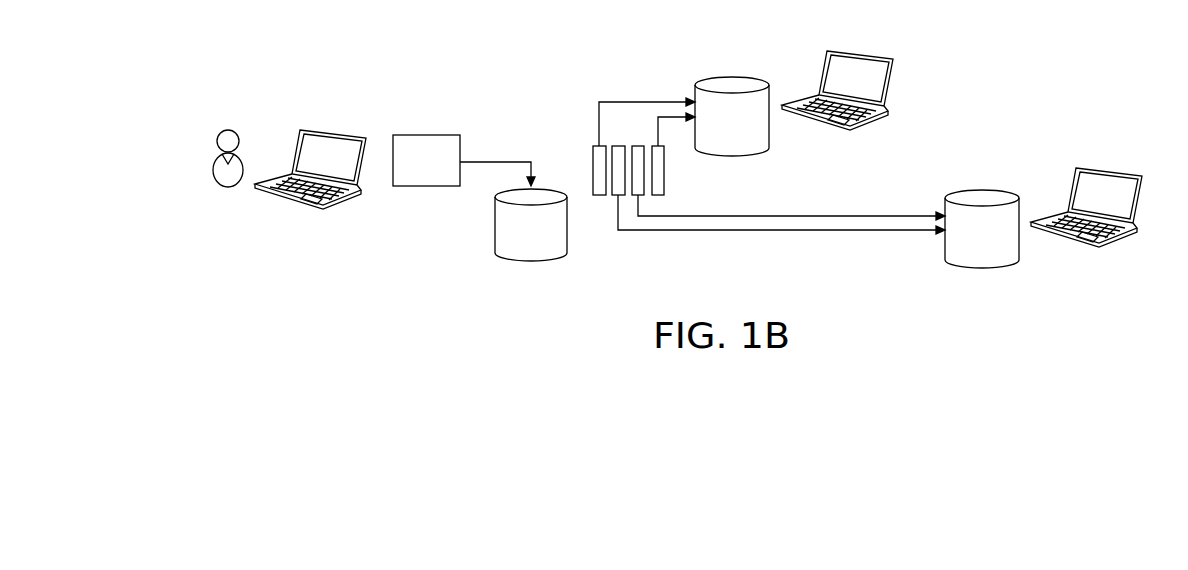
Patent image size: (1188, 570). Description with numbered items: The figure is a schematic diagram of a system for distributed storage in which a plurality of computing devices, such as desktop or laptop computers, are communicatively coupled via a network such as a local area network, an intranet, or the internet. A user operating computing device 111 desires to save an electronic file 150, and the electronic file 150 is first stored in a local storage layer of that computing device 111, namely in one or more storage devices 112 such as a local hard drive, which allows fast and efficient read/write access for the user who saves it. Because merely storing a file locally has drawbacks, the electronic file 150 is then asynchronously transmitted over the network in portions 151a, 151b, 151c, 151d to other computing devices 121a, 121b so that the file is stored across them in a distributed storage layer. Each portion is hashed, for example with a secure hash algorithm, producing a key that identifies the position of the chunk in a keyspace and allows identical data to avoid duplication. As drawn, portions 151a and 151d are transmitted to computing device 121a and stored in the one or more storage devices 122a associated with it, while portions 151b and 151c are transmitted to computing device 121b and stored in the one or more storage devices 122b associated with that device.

The computing device 111 is at (323, 207).
The electronic file 150 is at (447, 186).
The storage devices 112 is at (546, 260).
The portion 151a is at (592, 150).
The portion 151b is at (614, 196).
The portion 151c is at (639, 146).
The portion 151d is at (665, 158).
The storage devices 122a is at (717, 80).
The storage devices 122b is at (965, 195).
The computing device 121a is at (865, 68).
The computing device 121b is at (1115, 185).